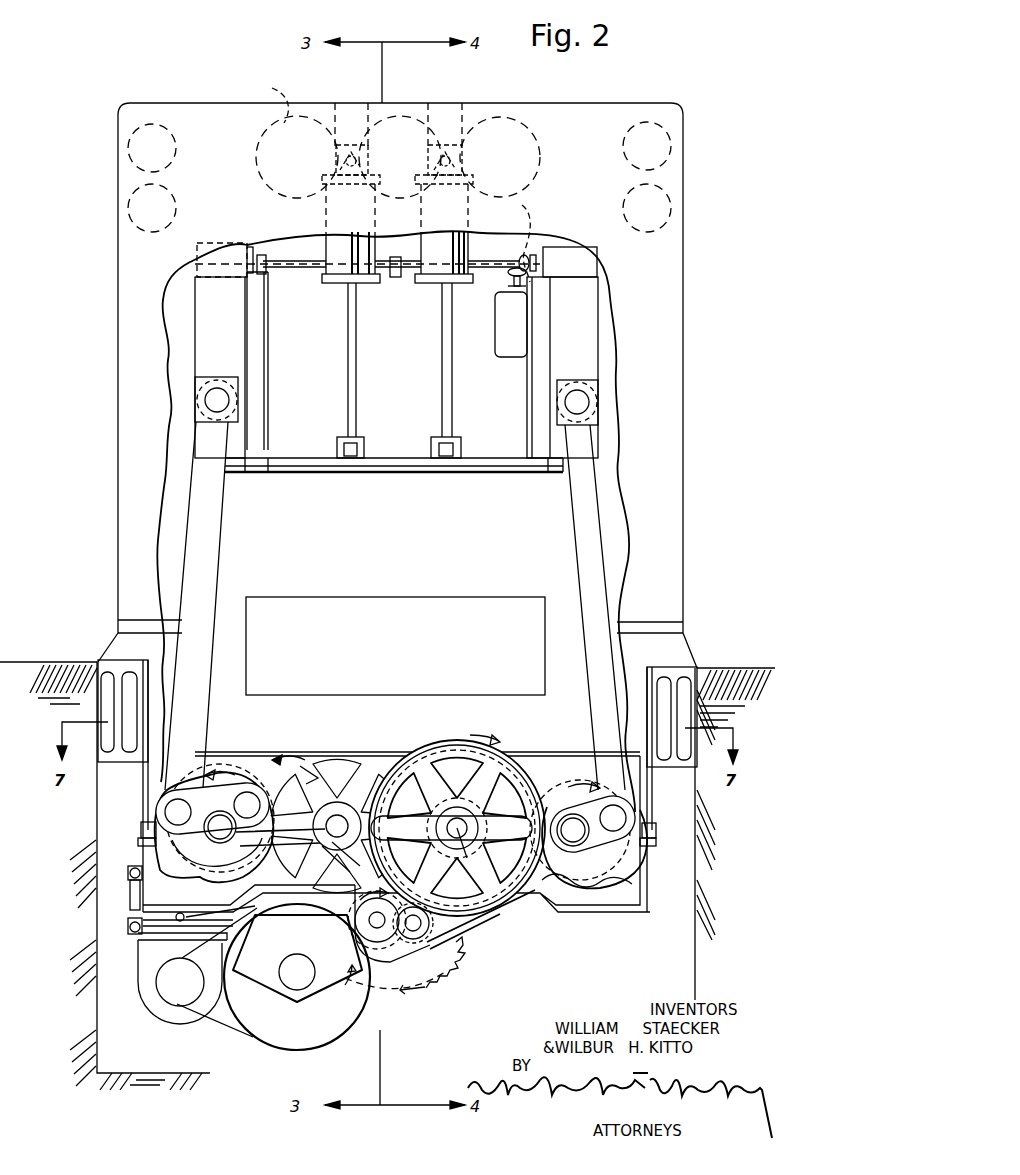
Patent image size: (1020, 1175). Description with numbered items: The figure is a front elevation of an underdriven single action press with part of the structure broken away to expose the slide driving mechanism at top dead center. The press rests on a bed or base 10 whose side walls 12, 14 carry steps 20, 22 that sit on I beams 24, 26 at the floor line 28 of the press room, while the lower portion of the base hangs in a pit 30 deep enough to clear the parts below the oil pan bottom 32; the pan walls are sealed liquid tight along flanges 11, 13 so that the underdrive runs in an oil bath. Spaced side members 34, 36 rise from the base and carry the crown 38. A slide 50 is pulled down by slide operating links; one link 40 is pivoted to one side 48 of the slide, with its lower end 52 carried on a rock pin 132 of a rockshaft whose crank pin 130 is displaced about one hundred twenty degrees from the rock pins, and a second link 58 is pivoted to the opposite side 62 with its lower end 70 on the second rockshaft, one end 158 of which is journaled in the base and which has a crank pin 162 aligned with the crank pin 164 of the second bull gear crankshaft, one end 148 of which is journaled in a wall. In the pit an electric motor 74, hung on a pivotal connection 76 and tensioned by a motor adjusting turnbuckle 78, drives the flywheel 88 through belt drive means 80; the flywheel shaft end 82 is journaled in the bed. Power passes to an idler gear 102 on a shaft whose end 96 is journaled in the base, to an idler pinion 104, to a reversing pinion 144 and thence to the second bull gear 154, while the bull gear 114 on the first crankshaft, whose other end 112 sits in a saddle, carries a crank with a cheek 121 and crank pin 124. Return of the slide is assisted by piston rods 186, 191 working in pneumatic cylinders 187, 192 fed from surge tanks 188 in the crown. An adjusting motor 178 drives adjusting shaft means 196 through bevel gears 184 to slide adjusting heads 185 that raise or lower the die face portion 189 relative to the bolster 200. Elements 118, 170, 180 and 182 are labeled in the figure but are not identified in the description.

The bed or base 10 is at (692, 633).
The flange 11 is at (150, 838).
The side wall 12 is at (148, 785).
The flange 13 is at (146, 822).
The side wall 14 is at (655, 790).
The step 20 is at (118, 660).
The step 22 is at (680, 665).
The I beam 24 is at (115, 710).
The I beam 26 is at (684, 713).
The floor line 28 is at (25, 662).
The pit 30 is at (97, 1024).
The bottom 32 is at (620, 913).
The side member 34 is at (118, 345).
The side member 36 is at (683, 411).
The crown 38 is at (672, 151).
The slide operating link 40 is at (195, 511).
The side of the slide 48 is at (200, 302).
The slide 50 is at (364, 472).
The lower end of operating link 52 is at (268, 777).
The operating link 58 is at (603, 527).
The opposite side of the slide 62 is at (598, 300).
The lower end of operating link 70 is at (598, 775).
The electric motor 74 is at (138, 970).
The pivotal connection 76 is at (186, 917).
The motor adjusting turnbuckle 78 is at (134, 895).
The belt drive means 80 is at (222, 1030).
The end of main drive shaft 82 is at (340, 1010).
The flywheel 88 is at (328, 1022).
The end of idler drive shaft 96 is at (389, 918).
The idler gear 102 is at (445, 970).
The idler pinion 104 is at (418, 984).
The end of bull gear crankshaft 112 is at (318, 775).
The bull gear 114 is at (318, 772).
The pin 118 is at (225, 840).
The cheek 121 is at (350, 858).
The crank pin 124 is at (333, 812).
The crank pin 130 is at (278, 758).
The rock pin 132 is at (160, 810).
The reversing pinion 144 is at (473, 932).
The end of second bull gear crankshaft 148 is at (470, 840).
The second bull gear 154 is at (458, 745).
The end of second operating link rockshaft 158 is at (596, 870).
The crank pin 162 is at (548, 765).
The crank pin 164 is at (462, 866).
The connecting link 170 is at (318, 829).
The adjusting motor 178 is at (500, 336).
The cylinder 180 is at (412, 242).
The valve 182 is at (508, 283).
The bevel gears 184 is at (509, 243).
The slide adjusting heads 185 is at (222, 256).
The piston rods 186 is at (345, 380).
The pneumatic cylinders 187 is at (338, 241).
The surge tanks 188 is at (267, 98).
The die face portion 189 is at (460, 474).
The piston rods 191 is at (437, 386).
The pneumatic cylinders 192 is at (470, 251).
The adjusting shaft means 196 is at (385, 267).
The bolster 200 is at (447, 600).